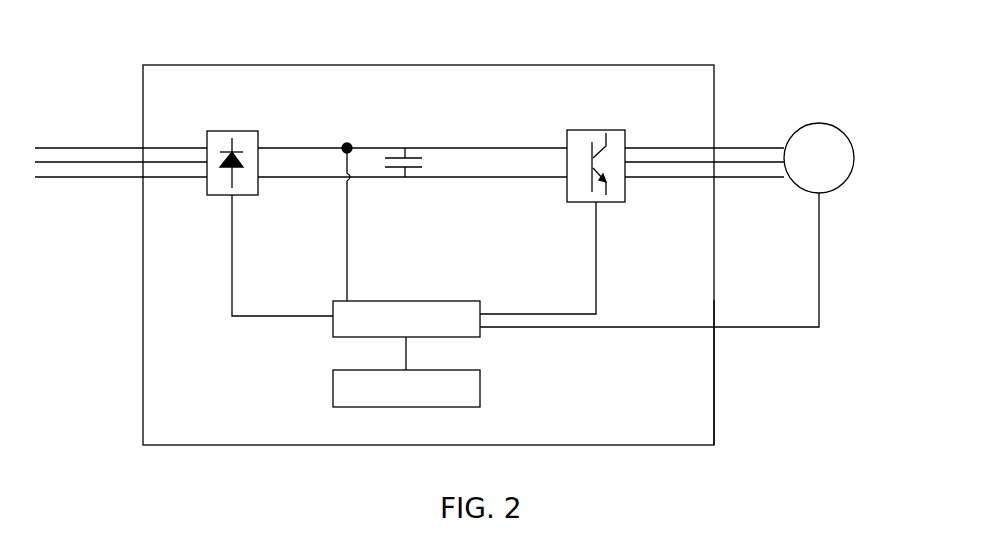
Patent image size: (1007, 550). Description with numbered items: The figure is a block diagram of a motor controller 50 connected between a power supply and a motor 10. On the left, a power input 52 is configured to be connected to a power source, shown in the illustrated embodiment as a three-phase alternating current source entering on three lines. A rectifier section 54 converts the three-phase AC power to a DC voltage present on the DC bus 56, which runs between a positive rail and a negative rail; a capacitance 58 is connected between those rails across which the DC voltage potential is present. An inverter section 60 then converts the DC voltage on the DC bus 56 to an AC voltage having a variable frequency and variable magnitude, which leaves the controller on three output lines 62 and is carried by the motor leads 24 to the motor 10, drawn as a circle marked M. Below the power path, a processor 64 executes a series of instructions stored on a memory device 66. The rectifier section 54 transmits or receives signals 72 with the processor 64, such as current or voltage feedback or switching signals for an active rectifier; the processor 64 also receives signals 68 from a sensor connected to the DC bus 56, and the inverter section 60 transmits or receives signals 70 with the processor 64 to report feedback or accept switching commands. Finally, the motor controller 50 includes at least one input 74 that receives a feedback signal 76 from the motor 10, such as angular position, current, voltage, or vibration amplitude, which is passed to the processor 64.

The motor 10 is at (826, 124).
The motor leads 24 is at (744, 143).
The motor controller 50 is at (537, 65).
The power input 52 is at (138, 146).
The rectifier section 54 is at (236, 130).
The DC bus 56 is at (312, 145).
The capacitance 58 is at (428, 160).
The inverter section 60 is at (583, 130).
The output power lines 62 is at (708, 146).
The processor 64 is at (333, 322).
The memory device 66 is at (333, 393).
The signals 68 is at (347, 243).
The signals 70 is at (596, 242).
The signals 72 is at (232, 243).
The input 74 is at (718, 340).
The feedback signal 76 is at (819, 243).